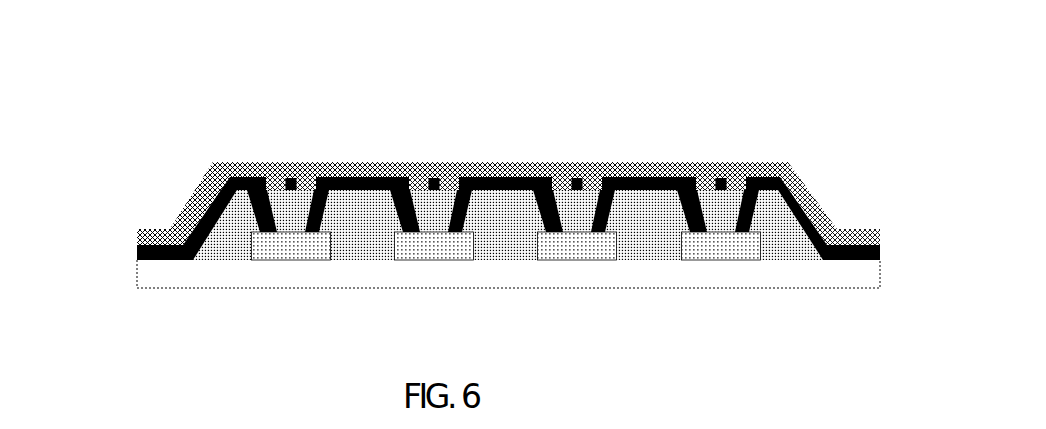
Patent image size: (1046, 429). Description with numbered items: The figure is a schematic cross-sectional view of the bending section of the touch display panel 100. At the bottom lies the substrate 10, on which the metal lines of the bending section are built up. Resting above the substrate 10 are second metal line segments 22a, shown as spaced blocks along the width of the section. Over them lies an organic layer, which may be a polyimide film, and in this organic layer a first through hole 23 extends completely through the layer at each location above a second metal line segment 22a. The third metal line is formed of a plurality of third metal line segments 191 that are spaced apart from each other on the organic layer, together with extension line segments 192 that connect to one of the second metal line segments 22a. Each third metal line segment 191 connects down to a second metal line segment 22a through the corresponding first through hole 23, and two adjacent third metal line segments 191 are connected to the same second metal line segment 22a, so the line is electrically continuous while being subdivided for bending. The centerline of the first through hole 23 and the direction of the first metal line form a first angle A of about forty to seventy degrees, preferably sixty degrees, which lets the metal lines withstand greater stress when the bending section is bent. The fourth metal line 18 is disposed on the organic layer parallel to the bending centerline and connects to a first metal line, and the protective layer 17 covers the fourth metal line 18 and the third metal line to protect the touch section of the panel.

The touch display panel 100 is at (560, 100).
The substrate 10 is at (850, 267).
The protective layer 17 is at (843, 230).
The fourth metal line 18 is at (742, 165).
The third metal line segment 191 is at (174, 229).
The extension line segment 192 is at (372, 170).
The second metal line segment 22a is at (722, 248).
The first through hole 23 is at (277, 165).
The first angle A is at (472, 224).